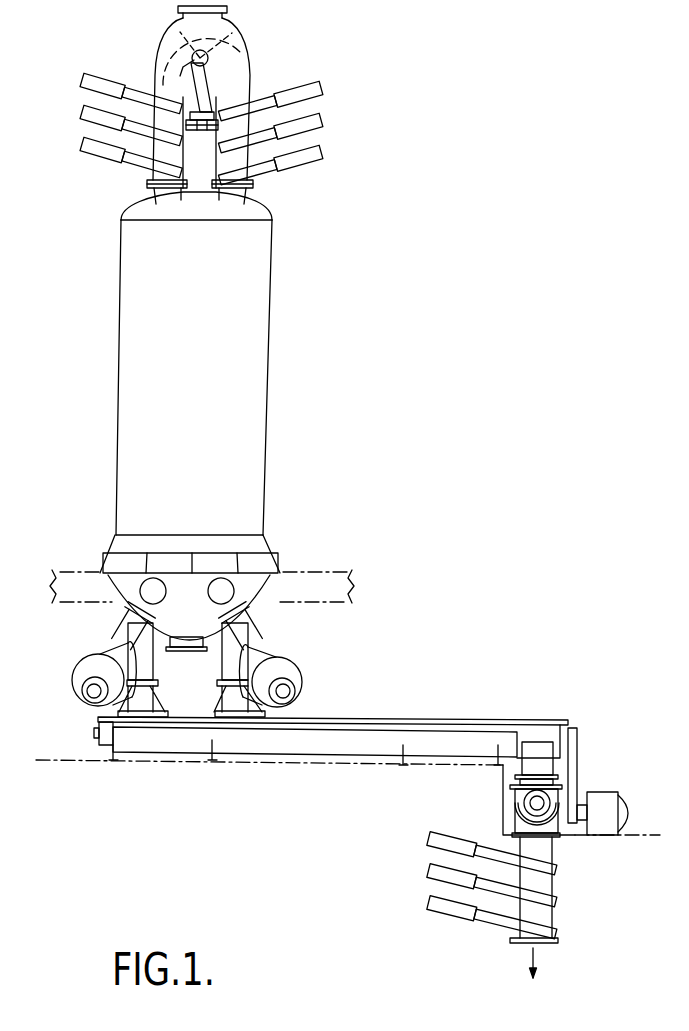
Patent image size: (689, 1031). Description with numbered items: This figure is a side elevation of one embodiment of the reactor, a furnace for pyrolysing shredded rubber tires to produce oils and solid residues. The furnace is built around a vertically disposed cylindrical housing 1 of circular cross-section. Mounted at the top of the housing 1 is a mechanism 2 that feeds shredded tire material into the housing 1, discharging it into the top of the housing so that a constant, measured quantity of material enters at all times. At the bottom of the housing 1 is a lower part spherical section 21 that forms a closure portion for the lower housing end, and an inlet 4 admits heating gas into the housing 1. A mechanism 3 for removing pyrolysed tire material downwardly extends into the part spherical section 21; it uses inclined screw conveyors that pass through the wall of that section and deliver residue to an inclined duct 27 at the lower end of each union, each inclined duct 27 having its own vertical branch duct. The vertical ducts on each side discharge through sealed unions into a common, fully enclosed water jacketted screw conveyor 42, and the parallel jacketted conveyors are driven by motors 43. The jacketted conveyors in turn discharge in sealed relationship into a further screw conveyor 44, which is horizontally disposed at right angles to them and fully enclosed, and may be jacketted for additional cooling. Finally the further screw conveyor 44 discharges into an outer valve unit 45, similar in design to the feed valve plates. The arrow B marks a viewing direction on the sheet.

The cylindrical housing 1 is at (230, 365).
The feed mechanism 2 is at (233, 62).
The removal mechanism 3 is at (262, 623).
The inlet 4 is at (186, 652).
The lower part spherical section 21 is at (250, 595).
The inclined duct 27 is at (118, 644).
The water jacketted screw conveyor 42 is at (382, 735).
The motor 43 is at (607, 790).
The further screw conveyor 44 is at (523, 800).
The outer valve unit 45 is at (555, 890).
The viewing direction arrow B is at (303, 499).